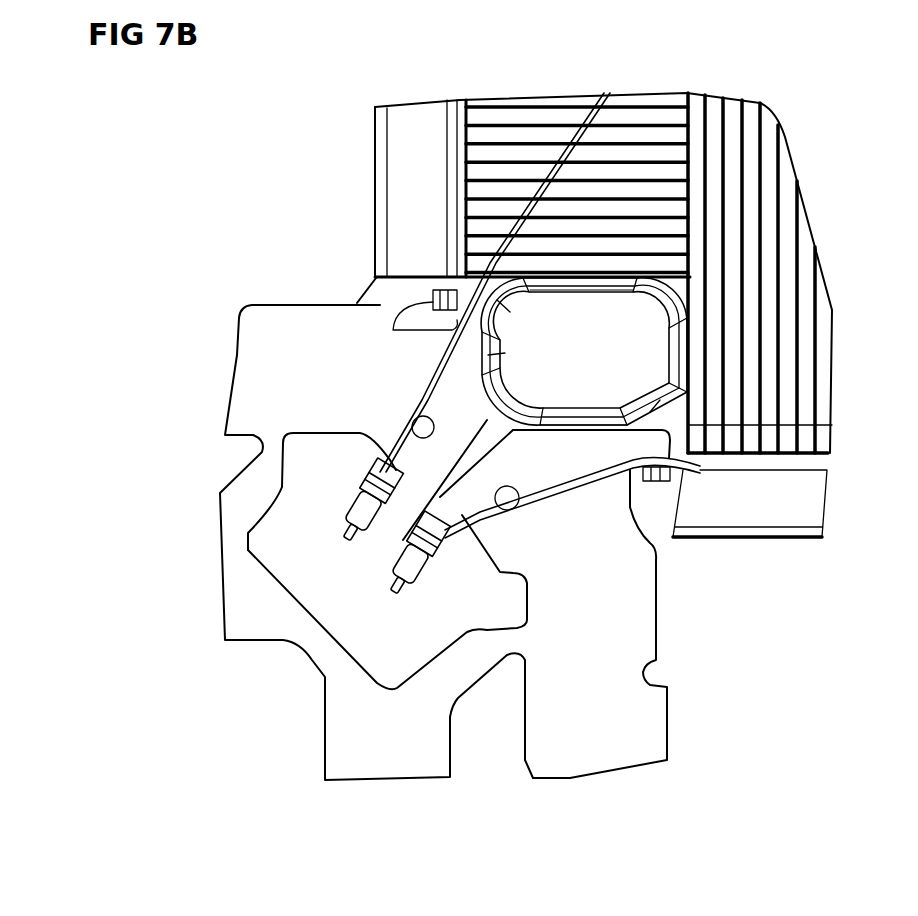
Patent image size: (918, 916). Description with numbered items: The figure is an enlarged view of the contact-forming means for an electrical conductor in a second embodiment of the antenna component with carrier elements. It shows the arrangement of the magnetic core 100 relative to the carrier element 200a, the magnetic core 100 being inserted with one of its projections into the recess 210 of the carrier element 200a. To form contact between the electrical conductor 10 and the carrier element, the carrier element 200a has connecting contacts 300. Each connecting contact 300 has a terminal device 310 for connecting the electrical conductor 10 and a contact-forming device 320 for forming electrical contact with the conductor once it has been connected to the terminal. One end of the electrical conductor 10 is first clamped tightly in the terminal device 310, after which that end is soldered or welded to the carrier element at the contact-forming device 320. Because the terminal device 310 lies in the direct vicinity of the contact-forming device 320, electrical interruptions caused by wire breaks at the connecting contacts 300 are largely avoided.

The electrical conductor 10 is at (537, 178).
The magnetic core 100 is at (357, 152).
The carrier element 200a is at (217, 310).
The recess 210 is at (495, 422).
The connecting contact 300 is at (355, 557).
The terminal device 310 is at (370, 463).
The contact-forming device 320 is at (345, 500).